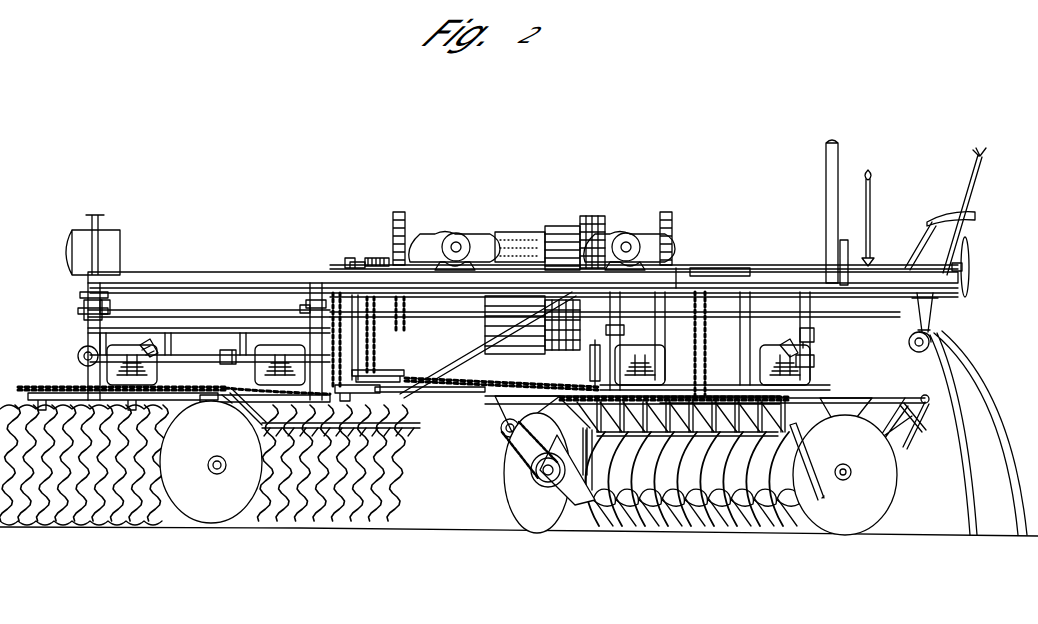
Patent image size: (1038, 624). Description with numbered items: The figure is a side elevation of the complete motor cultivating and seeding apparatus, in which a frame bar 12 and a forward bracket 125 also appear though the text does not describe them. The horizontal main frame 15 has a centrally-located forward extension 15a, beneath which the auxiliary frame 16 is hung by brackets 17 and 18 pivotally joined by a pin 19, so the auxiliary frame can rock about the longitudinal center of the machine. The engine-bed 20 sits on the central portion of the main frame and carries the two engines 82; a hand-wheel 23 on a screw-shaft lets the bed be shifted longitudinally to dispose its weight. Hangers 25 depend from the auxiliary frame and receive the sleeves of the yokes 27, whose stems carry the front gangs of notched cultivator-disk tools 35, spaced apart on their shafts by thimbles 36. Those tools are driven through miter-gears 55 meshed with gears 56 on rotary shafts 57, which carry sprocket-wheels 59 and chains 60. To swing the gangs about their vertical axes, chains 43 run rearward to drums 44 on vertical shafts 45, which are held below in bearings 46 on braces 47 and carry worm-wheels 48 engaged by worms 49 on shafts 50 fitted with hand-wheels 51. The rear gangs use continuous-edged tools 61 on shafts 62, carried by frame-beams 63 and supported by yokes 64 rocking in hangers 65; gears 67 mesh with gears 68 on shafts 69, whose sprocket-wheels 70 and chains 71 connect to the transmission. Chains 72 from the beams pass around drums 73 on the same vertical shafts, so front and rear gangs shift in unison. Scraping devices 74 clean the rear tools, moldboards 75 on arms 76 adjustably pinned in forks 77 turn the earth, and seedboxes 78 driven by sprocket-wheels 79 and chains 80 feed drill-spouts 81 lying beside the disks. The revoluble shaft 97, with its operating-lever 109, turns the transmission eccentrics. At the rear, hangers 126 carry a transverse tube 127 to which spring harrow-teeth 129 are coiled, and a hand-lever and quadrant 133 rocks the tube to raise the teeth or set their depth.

The frame bar 12 is at (678, 266).
The main frame 15 is at (748, 288).
The forward extension 15a is at (270, 278).
The auxiliary frame 16 is at (205, 322).
The bracket 17 is at (88, 298).
The bracket 18 is at (84, 312).
The pin 19 is at (110, 310).
The engine-bed 20 is at (462, 276).
The hand-wheel 23 is at (238, 400).
The hangers 25 is at (80, 358).
The yokes 27 is at (100, 374).
The tools 35 is at (418, 446).
The thimbles 36 is at (204, 465).
The chains 43 is at (325, 417).
The drums 44 is at (425, 403).
The vertical shafts 45 is at (378, 346).
The bearings 46 is at (420, 393).
The braces 47 is at (468, 346).
The worm-wheels 48 is at (356, 264).
The worms 49 is at (378, 258).
The shafts 50 is at (710, 268).
The hand-wheels 51 is at (970, 252).
The miter-gears 55 is at (130, 368).
The gears 56 is at (148, 346).
The rotary shafts 57 is at (210, 358).
The sprocket-wheels 59 is at (351, 337).
The chains 60 is at (347, 340).
The tools 61 is at (700, 474).
The shafts 62 is at (546, 478).
The frame-beams 63 is at (568, 400).
The yoke 64 is at (590, 382).
The hangers 65 is at (620, 334).
The gears 67 is at (635, 368).
The gears 68 is at (805, 342).
The shafts 69 is at (778, 366).
The sprocket-wheels 70 is at (688, 463).
The chains 71 is at (740, 340).
The chains 72 is at (597, 381).
The drums 73 is at (404, 374).
The scraping devices 74 is at (595, 460).
The moldboards 75 is at (622, 495).
The arms 76 is at (586, 470).
The forks 77 is at (314, 290).
The seedboxes 78 is at (586, 373).
The sprocket-wheels 79 is at (530, 460).
The chains 80 is at (529, 450).
The drill-spouts 81 is at (842, 438).
The engines 82 is at (456, 247).
The revoluble shaft 97 is at (448, 314).
The operating-lever 109 is at (868, 232).
The bracket 125 is at (72, 252).
The hangers 126 is at (934, 316).
The tube 127 is at (932, 338).
The spring harrow-teeth 129 is at (1002, 420).
The hand-lever and quadrant 133 is at (976, 186).